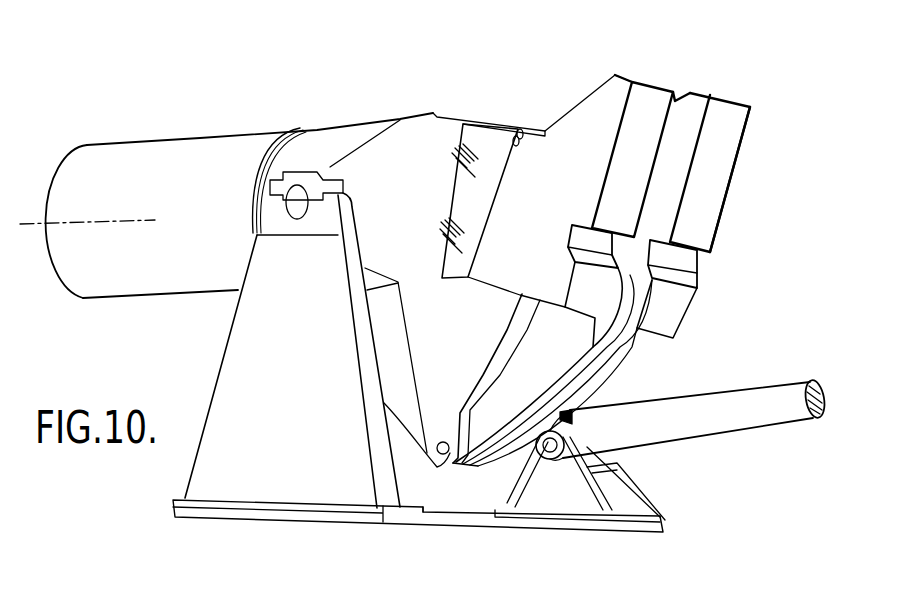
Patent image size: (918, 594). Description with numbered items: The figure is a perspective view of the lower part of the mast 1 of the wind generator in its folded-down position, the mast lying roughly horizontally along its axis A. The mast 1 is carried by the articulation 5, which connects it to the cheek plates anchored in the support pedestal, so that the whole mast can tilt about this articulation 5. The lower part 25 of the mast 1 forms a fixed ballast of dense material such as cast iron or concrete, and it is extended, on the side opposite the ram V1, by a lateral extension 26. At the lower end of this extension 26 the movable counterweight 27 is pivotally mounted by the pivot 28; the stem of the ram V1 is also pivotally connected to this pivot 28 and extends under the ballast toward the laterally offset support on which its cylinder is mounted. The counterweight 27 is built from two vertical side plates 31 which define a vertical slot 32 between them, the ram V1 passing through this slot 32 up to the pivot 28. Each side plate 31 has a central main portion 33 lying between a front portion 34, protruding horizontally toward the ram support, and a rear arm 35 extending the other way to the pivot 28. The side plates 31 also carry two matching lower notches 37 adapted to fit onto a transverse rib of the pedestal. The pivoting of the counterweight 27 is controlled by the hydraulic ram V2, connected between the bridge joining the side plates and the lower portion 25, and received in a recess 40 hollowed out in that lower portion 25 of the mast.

The mast 1 is at (170, 178).
The axis of rotation A is at (33, 228).
The articulation 5 is at (298, 195).
The lower part of the mast 25 is at (350, 138).
The lateral extension 26 is at (388, 347).
The movable counterweight 27 is at (764, 125).
The pivot 28 is at (443, 455).
The vertical side plates 31 is at (722, 85).
The vertical slot 32 is at (680, 172).
The central main portion 33 is at (577, 208).
The front portion 34 is at (590, 113).
The rear arm 35 is at (560, 353).
The lower notches 37 is at (600, 242).
The recess 40 is at (511, 130).
The ram V1 is at (728, 405).
The hydraulic ram V2 is at (522, 130).